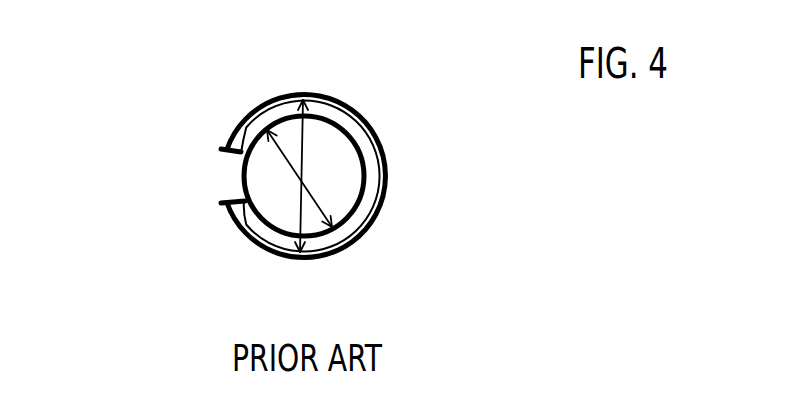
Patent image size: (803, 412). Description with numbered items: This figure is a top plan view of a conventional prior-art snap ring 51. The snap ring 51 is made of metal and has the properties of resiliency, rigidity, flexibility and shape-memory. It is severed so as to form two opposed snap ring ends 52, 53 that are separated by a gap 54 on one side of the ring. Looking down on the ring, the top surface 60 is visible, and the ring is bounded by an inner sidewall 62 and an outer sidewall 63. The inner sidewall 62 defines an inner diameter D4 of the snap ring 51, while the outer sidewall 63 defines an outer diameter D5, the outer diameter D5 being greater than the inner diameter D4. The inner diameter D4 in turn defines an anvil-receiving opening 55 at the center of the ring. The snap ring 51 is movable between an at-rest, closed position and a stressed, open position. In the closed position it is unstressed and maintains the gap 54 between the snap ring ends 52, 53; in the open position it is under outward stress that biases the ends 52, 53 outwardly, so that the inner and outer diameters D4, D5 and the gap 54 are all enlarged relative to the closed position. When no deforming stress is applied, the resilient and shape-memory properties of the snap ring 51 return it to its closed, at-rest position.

The snap ring 51 is at (203, 63).
The snap ring end 52 is at (232, 153).
The snap ring end 53 is at (239, 201).
The gap 54 is at (238, 188).
The anvil-receiving opening 55 is at (313, 163).
The top surface 60 is at (364, 135).
The inner sidewall 62 is at (257, 219).
The outer sidewall 63 is at (248, 241).
The inner diameter D4 is at (317, 222).
The outer diameter D5 is at (303, 222).